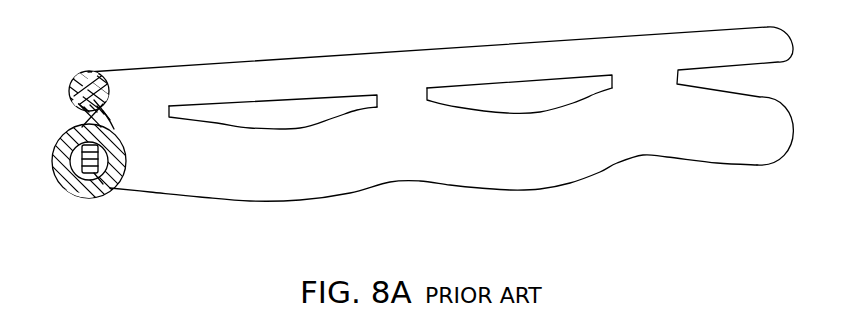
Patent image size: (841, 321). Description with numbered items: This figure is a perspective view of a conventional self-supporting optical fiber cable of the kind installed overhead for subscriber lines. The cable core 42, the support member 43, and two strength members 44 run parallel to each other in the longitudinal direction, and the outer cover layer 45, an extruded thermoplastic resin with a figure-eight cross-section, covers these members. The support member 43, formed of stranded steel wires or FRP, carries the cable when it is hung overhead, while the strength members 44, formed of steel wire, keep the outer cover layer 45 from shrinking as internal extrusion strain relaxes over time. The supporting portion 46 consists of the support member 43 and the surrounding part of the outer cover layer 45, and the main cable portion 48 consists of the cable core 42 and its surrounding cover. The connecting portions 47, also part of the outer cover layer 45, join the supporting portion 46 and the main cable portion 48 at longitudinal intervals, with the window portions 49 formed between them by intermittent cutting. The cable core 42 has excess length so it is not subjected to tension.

The cable core 42 is at (103, 188).
The support member 43 is at (71, 83).
The strength members 44 is at (82, 190).
The outer cover layer 45 is at (57, 183).
The supporting portion 46 is at (332, 73).
The connecting portions 47 is at (127, 113).
The main cable portion 48 is at (313, 173).
The window portions 49 is at (350, 107).